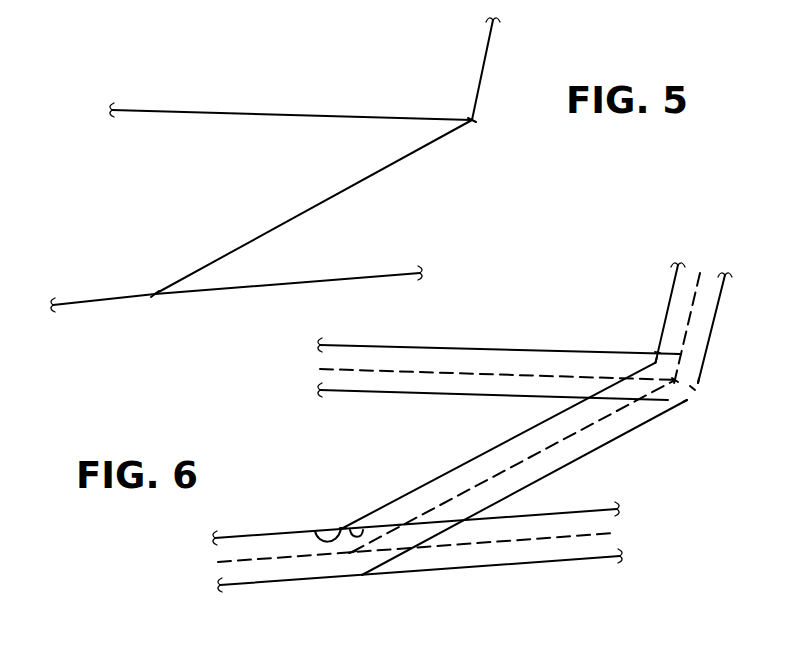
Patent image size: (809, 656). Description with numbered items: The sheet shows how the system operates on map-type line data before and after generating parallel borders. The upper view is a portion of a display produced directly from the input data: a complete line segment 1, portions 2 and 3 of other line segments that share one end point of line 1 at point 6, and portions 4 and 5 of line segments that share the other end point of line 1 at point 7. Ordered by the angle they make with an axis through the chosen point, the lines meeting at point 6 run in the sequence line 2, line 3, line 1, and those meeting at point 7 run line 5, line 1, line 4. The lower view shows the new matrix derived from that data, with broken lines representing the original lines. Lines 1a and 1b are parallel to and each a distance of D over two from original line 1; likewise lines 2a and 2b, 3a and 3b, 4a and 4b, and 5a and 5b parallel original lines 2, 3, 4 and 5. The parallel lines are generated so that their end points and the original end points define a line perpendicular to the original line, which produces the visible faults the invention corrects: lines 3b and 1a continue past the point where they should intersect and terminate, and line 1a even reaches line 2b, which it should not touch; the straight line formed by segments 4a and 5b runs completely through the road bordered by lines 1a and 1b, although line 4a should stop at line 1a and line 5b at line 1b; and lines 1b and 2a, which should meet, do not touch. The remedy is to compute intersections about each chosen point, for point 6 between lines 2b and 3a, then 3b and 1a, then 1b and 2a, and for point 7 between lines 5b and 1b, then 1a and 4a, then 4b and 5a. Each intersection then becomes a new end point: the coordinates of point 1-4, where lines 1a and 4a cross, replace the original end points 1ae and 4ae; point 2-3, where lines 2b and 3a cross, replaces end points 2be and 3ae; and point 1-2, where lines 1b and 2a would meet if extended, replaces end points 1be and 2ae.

In FIG. 5, the complete line segment 1 is at (392, 163).
In FIG. 5, the portion of line segment 2 is at (485, 72).
In FIG. 5, the portion of line segment 3 is at (306, 112).
In FIG. 5, the portion of line segment 4 is at (110, 296).
In FIG. 5, the portion of line segment 5 is at (316, 281).
In FIG. 5, the point 6 is at (474, 121).
In FIG. 6, the point 6 is at (673, 379).
In FIG. 5, the point 7 is at (155, 297).
In FIG. 6, the point 7 is at (352, 553).
In FIG. 6, the parallel line 1a is at (461, 466).
In FIG. 6, the parallel line 1b is at (524, 487).
In FIG. 6, the original end point of line 1a 1ae is at (315, 531).
In FIG. 6, the original end point of line 1b 1be is at (686, 402).
In FIG. 6, the intersection point 1-2 is at (693, 388).
In FIG. 6, the intersection point 1-4 is at (339, 527).
In FIG. 6, the parallel line 2a is at (718, 312).
In FIG. 6, the parallel line 2b is at (674, 277).
In FIG. 6, the original end point of line 2a 2ae is at (699, 385).
In FIG. 6, the original end point of line 2b 2be is at (657, 362).
In FIG. 6, the intersection point 2-3 is at (656, 353).
In FIG. 6, the parallel line 3a is at (503, 347).
In FIG. 6, the parallel line 3b is at (383, 401).
In FIG. 6, the original end point of line 3a 3ae is at (682, 355).
In FIG. 6, the parallel line 4a is at (255, 536).
In FIG. 6, the parallel line 4b is at (276, 586).
In FIG. 6, the original end point of line 4a 4ae is at (364, 528).
In FIG. 6, the parallel line 5a is at (512, 568).
In FIG. 6, the parallel line 5b is at (548, 513).